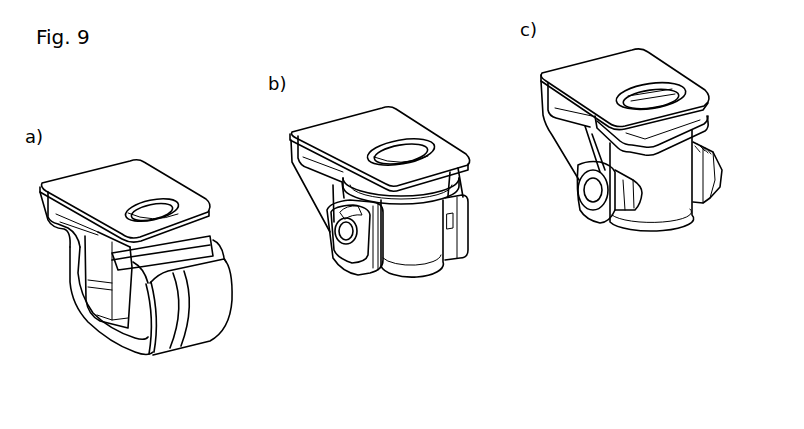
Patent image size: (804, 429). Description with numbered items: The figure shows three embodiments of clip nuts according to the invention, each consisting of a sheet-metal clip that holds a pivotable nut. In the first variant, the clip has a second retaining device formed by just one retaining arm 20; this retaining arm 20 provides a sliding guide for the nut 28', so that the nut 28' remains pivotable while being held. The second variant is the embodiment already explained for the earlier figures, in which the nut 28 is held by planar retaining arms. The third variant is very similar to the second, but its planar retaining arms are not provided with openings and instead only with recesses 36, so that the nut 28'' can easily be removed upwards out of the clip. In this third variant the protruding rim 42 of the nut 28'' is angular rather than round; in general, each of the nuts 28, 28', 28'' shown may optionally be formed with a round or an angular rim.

The retaining arm 20 is at (157, 343).
The nut 28' is at (188, 246).
The nut 28 is at (397, 252).
The nut 28'' is at (652, 203).
The recesses 36 is at (586, 201).
The protruding rim 42 is at (711, 127).